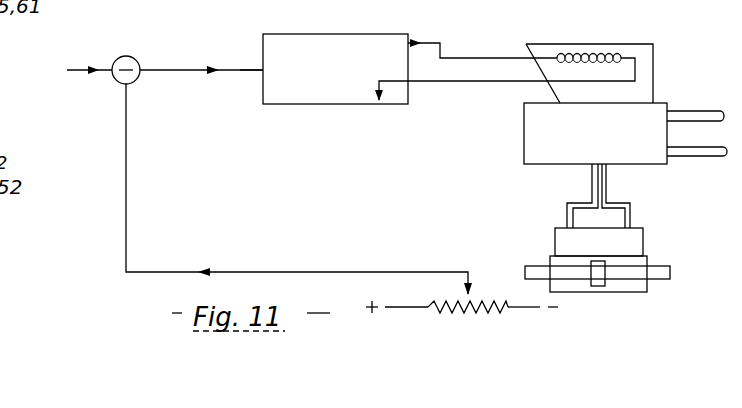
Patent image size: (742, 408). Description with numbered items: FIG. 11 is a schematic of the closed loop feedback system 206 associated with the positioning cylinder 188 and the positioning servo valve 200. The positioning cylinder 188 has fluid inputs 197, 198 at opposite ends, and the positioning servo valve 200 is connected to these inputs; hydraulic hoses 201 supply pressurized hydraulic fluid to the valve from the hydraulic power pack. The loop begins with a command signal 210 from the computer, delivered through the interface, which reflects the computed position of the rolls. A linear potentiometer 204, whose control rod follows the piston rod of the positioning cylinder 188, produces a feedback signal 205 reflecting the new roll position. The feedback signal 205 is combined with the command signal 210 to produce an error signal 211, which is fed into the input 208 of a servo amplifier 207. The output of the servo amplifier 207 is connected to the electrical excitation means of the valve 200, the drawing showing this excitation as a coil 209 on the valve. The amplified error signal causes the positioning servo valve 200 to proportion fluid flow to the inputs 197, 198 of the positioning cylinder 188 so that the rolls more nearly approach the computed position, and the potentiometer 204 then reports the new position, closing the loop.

The positioning cylinder 188 is at (609, 292).
The fluid input 197 is at (558, 228).
The fluid input 198 is at (643, 228).
The positioning servo valve 200 is at (536, 140).
The hydraulic hoses 201 is at (706, 86).
The linear potentiometer 204 is at (446, 318).
The feedback signal 205 is at (204, 268).
The closed loop feedback system 206 is at (507, 12).
The servo amplifier 207 is at (286, 104).
The input 208 is at (263, 74).
The solenoid coil 209 is at (610, 36).
The command signal 210 is at (82, 76).
The error signal 211 is at (224, 66).